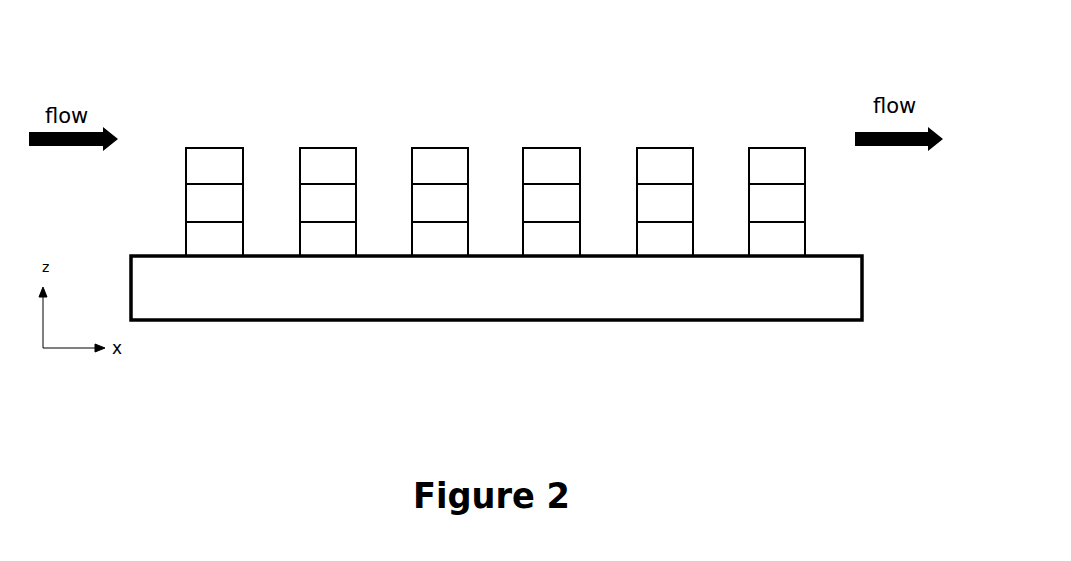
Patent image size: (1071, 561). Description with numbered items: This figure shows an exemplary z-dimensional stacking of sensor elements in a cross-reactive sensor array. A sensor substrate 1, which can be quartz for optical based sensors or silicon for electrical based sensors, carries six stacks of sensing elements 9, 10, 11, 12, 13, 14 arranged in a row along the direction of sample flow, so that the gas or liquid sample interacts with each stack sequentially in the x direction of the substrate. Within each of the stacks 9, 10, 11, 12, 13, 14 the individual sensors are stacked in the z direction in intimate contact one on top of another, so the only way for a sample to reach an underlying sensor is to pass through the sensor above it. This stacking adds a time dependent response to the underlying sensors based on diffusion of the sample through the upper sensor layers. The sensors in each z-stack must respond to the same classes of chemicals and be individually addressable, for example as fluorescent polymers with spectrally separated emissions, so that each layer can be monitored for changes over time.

The sensor substrate 1 is at (862, 290).
The stack of sensing elements 9 is at (219, 148).
The stack of sensing elements 10 is at (325, 148).
The stack of sensing elements 11 is at (445, 148).
The stack of sensing elements 12 is at (555, 148).
The stack of sensing elements 13 is at (662, 148).
The stack of sensing elements 14 is at (777, 148).